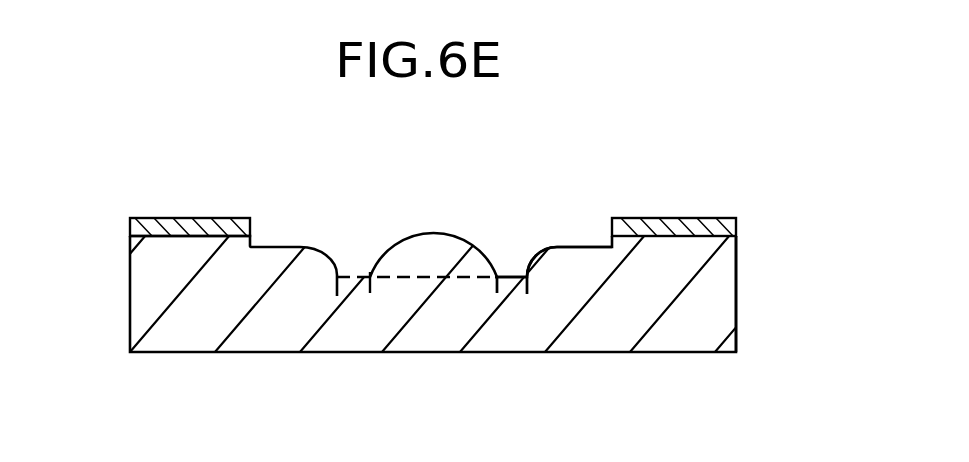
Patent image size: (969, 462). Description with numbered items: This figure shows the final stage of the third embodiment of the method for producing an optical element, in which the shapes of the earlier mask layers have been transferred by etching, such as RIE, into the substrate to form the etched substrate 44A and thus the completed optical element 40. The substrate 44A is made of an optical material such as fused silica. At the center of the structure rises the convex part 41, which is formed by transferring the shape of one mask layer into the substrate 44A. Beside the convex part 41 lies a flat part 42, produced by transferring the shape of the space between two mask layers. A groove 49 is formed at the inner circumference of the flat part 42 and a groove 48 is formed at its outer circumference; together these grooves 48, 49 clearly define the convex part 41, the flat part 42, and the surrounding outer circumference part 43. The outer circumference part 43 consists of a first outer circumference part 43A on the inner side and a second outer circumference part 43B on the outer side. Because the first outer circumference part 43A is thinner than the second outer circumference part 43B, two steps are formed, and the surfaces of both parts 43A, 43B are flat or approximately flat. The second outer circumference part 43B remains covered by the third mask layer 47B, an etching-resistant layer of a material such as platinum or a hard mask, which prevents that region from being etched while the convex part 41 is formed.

The optical element 40 is at (349, 199).
The convex part 41 is at (430, 233).
The flat part 42 is at (511, 277).
The outer circumference part 43 is at (632, 189).
The first outer circumference part 43A is at (572, 247).
The second outer circumference part 43B is at (750, 240).
The substrate 44A is at (720, 328).
The third mask layer 47B is at (160, 218).
The groove 48 is at (529, 281).
The groove 49 is at (503, 280).